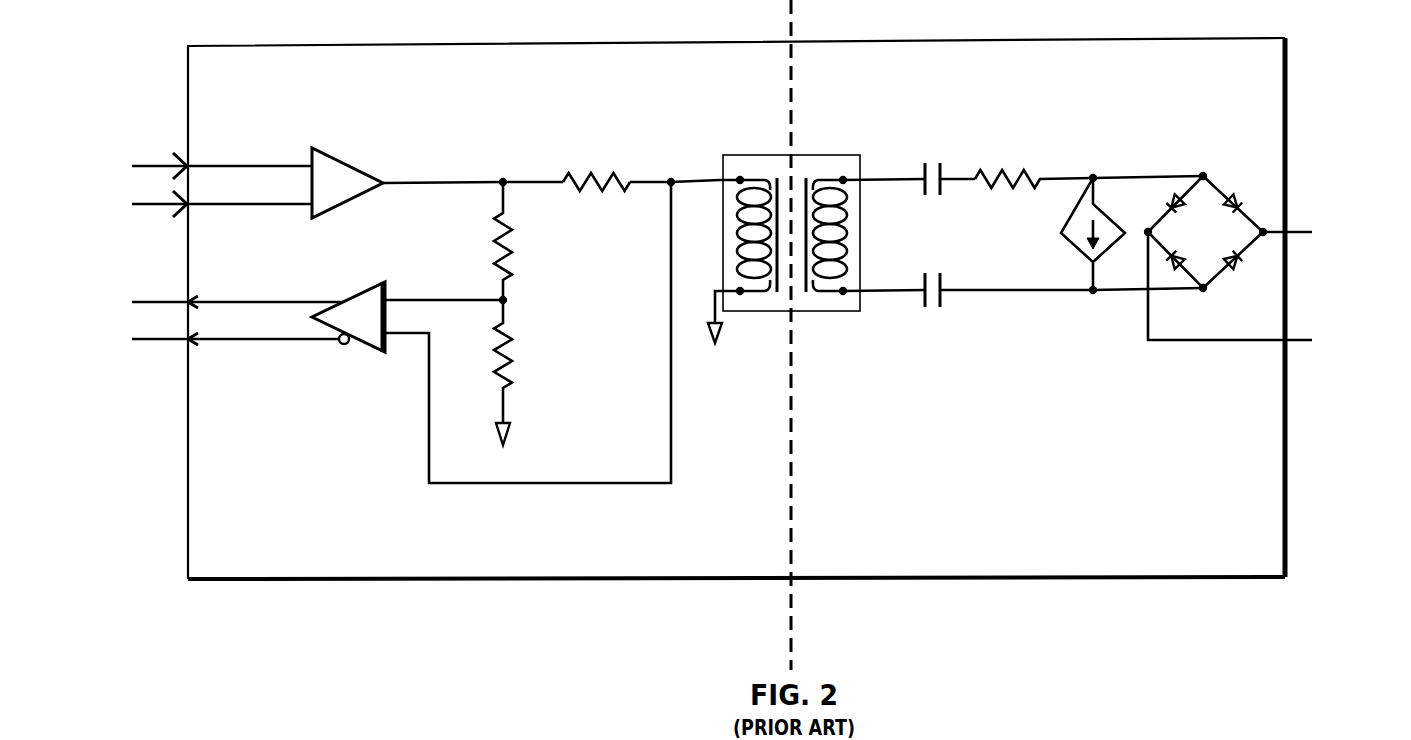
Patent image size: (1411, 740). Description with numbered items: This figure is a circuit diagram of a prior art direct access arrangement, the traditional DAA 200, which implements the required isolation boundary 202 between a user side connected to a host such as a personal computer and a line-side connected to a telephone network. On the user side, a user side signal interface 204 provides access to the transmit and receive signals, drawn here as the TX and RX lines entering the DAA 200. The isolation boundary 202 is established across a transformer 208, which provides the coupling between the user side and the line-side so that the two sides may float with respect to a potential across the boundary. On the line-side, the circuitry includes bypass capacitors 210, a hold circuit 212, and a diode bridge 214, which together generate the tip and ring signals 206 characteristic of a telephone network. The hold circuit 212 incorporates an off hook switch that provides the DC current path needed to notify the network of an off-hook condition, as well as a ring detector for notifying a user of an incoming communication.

The DAA 200 is at (417, 52).
The isolation boundary 202 is at (792, 601).
The user side signal interface 204 is at (113, 370).
The tip and ring signals 206 is at (1338, 365).
The transformer 208 is at (803, 158).
The bypass capacitors 210 is at (942, 194).
The hold circuit 212 is at (1082, 242).
The diode bridge 214 is at (1220, 244).